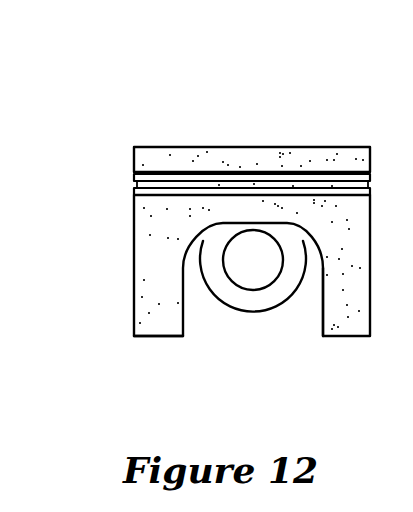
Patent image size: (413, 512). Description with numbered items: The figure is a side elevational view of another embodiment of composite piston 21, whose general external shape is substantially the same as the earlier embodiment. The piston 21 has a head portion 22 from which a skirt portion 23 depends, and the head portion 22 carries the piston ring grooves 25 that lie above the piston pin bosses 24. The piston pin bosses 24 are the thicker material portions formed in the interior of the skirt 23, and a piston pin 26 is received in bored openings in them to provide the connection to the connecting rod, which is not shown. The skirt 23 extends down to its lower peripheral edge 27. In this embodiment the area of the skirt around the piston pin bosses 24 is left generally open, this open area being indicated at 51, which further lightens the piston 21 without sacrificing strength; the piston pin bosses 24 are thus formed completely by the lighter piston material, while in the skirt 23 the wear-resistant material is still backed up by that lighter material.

The piston 21 is at (168, 113).
The head portion 22 is at (297, 148).
The skirt portion 23 is at (134, 268).
The piston pin bosses 24 is at (220, 283).
The piston ring grooves 25 is at (134, 193).
The piston pin 26 is at (258, 268).
The lower peripheral edge 27 is at (153, 337).
The open area 51 is at (322, 293).